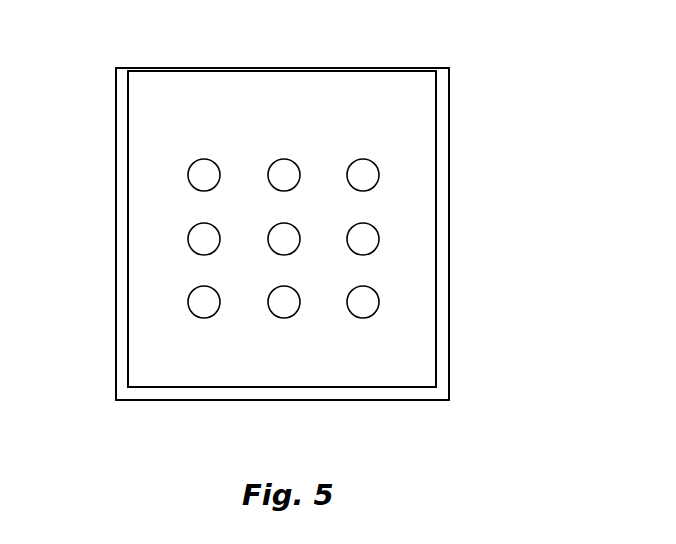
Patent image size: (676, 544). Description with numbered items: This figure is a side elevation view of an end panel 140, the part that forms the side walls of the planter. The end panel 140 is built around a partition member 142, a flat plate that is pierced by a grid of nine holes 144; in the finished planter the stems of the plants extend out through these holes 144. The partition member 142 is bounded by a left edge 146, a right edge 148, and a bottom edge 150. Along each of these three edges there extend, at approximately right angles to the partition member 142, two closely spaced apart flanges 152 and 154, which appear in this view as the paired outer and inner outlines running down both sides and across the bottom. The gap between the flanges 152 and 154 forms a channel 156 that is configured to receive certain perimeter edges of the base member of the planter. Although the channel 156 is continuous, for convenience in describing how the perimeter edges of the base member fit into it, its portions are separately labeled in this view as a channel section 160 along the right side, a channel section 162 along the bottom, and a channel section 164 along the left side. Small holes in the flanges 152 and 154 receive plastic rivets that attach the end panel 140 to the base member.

The end panel 140 is at (521, 85).
The partition member 142 is at (263, 88).
The holes 144 is at (200, 161).
The left edge 146 is at (128, 118).
The right edge 148 is at (436, 120).
The bottom edge 150 is at (157, 387).
The flange 152 is at (116, 247).
The flange 154 is at (128, 238).
The channel 156 is at (118, 325).
The channel section 160 is at (443, 161).
The channel section 162 is at (212, 392).
The channel section 164 is at (125, 139).